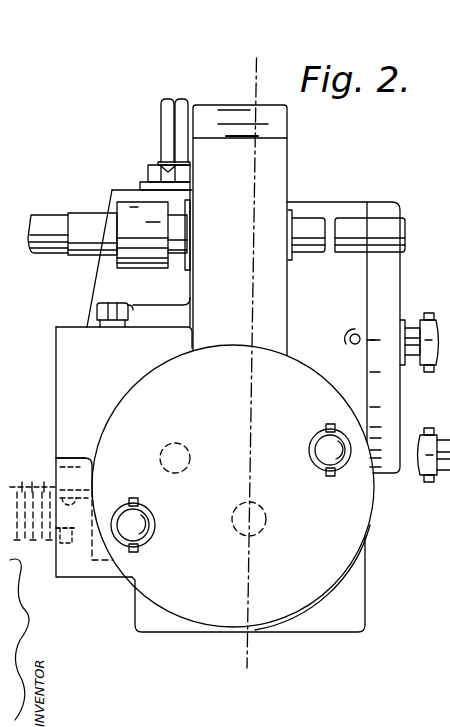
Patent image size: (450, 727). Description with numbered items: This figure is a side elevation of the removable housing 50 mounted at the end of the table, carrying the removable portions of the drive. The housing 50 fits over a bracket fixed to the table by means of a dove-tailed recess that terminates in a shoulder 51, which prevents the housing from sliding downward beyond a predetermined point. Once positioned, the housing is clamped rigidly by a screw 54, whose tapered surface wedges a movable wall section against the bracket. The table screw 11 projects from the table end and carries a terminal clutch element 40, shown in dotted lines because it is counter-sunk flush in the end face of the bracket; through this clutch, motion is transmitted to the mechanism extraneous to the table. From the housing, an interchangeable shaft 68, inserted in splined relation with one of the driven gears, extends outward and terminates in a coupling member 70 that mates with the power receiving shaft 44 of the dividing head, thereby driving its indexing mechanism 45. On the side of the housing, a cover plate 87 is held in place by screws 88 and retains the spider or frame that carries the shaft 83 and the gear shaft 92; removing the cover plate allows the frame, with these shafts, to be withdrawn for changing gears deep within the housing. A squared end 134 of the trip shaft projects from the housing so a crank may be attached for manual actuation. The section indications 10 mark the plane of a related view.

The section line 10 is at (279, 72).
The screw 11 is at (36, 474).
The terminal clutch element 40 is at (62, 550).
The power receiving shaft 44 is at (45, 254).
The indexing mechanism 45 is at (56, 462).
The housing 50 is at (332, 612).
The shoulder 51 is at (79, 456).
The screw 54 is at (97, 308).
The interchangeable shaft 68 is at (400, 233).
The coupling member 70 is at (143, 268).
The shaft 83 is at (266, 517).
The cover plate 87 is at (366, 523).
The screws 88 is at (318, 445).
The shaft 92 is at (190, 452).
The squared end 134 is at (161, 103).